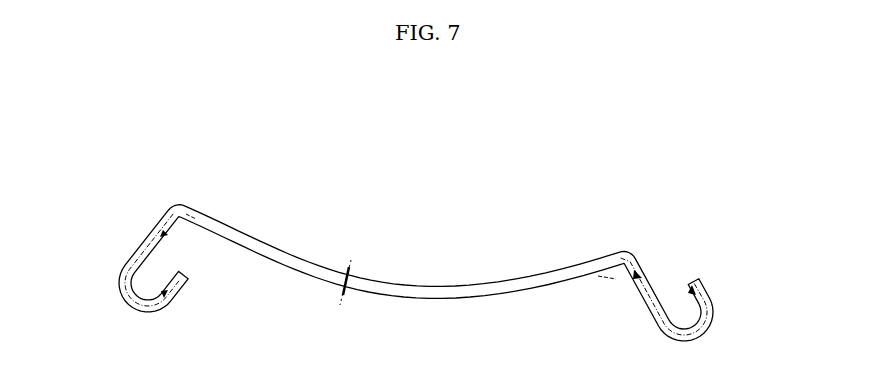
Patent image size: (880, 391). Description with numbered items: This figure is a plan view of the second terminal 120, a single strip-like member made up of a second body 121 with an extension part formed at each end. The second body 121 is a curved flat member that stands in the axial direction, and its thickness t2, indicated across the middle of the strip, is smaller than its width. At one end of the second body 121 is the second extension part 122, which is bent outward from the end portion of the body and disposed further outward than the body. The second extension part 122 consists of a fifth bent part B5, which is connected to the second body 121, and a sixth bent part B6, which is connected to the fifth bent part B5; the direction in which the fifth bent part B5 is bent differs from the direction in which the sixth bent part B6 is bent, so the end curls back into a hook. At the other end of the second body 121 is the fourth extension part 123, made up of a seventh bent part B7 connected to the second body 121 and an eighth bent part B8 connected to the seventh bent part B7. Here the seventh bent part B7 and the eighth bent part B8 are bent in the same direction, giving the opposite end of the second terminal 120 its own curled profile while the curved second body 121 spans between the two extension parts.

The second terminal 120 is at (170, 143).
The second body 121 is at (457, 297).
The second extension part 122 is at (703, 284).
The fourth extension part 123 is at (140, 253).
The fifth bent part B5 is at (634, 248).
The sixth bent part B6 is at (695, 348).
The seventh bent part B7 is at (168, 205).
The eighth bent part B8 is at (125, 318).
The thickness t2 is at (346, 290).